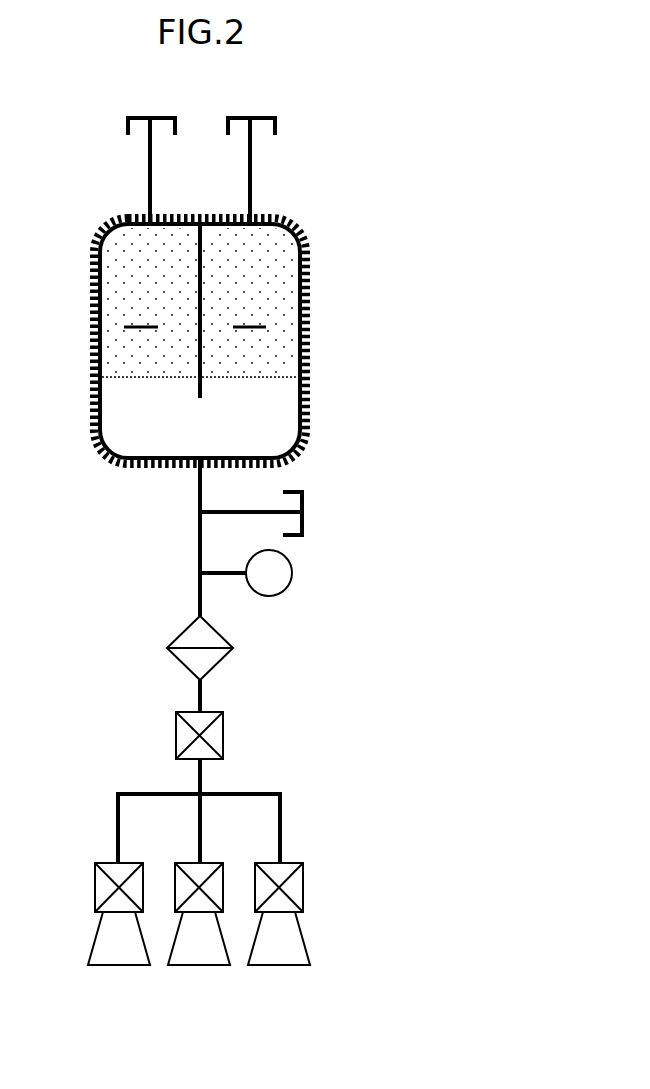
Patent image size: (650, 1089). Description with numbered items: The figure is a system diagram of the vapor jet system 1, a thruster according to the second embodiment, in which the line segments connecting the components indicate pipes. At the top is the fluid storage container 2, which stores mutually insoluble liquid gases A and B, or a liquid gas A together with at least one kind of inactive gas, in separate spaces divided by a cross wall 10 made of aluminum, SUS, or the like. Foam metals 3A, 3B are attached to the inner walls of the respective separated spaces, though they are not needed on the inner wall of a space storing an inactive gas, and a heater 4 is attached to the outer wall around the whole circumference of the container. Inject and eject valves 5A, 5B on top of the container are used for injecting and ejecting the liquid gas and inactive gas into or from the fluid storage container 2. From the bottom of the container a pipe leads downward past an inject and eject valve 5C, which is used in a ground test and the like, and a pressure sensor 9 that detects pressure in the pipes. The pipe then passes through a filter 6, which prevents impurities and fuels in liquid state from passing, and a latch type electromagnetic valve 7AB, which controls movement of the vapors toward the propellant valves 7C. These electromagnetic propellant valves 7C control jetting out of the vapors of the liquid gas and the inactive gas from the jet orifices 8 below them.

The vapor jet system 1 is at (445, 838).
The fluid storage container 2 is at (330, 202).
The foam metal 3A is at (135, 258).
The foam metal 3B is at (260, 258).
The heater 4 is at (88, 298).
The inject and eject valve 5A is at (158, 116).
The inject and eject valve 5B is at (260, 116).
The inject and eject valve 5C is at (305, 527).
The filter 6 is at (222, 630).
The latch type electromagnetic valve 7AB is at (225, 736).
The propellant valves 7C is at (78, 855).
The jet orifices 8 is at (330, 980).
The pressure sensor 9 is at (292, 578).
The cross wall 10 is at (198, 390).